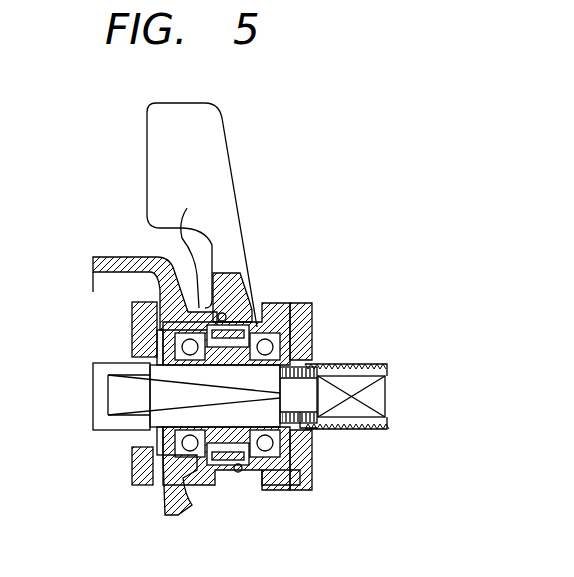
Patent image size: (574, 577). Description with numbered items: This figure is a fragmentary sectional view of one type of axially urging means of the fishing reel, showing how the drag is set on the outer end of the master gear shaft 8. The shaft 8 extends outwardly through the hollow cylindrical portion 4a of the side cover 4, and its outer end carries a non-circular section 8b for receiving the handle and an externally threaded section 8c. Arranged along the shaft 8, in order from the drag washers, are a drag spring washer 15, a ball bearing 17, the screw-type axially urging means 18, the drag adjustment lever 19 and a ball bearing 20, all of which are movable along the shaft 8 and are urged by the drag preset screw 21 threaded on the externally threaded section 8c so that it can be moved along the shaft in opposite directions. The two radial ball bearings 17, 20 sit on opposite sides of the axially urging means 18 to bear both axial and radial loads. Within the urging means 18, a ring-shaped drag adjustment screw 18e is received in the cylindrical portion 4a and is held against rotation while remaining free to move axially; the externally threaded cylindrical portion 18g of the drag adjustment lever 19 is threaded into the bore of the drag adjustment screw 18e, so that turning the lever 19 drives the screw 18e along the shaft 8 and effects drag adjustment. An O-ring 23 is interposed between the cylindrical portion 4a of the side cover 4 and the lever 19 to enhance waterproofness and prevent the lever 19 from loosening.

The side cover 4 is at (93, 257).
The hollow cylindrical portion 4a is at (185, 247).
The master gear shaft 8 is at (93, 397).
The non-circular section 8b is at (385, 398).
The externally threaded section 8c is at (370, 362).
The drag spring washer 15 is at (140, 437).
The ball bearing 17 is at (175, 485).
The axially urging means 18 is at (262, 306).
The drag adjustment screw 18e is at (240, 472).
The externally threaded cylindrical portion 18g is at (315, 425).
The drag adjustment lever 19 is at (217, 145).
The ball bearing 20 is at (280, 485).
The drag preset screw 21 is at (312, 324).
The O-ring 23 is at (243, 265).